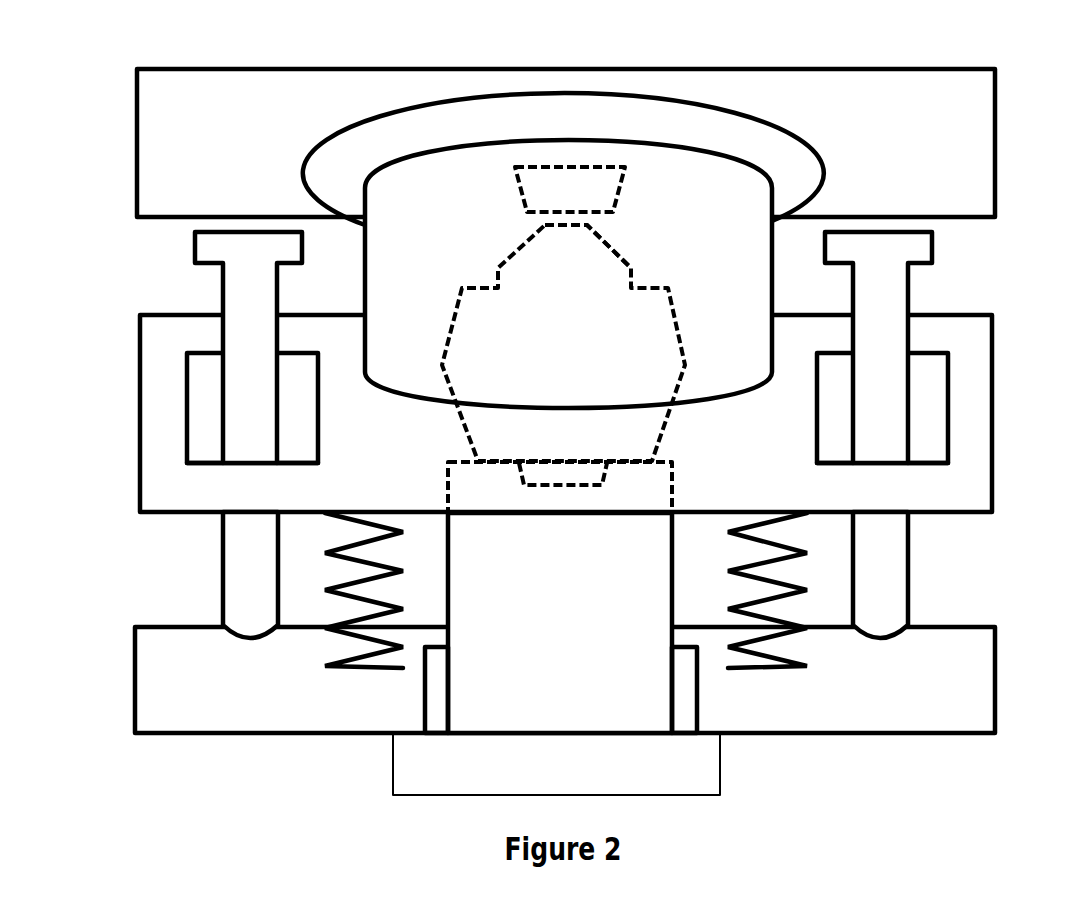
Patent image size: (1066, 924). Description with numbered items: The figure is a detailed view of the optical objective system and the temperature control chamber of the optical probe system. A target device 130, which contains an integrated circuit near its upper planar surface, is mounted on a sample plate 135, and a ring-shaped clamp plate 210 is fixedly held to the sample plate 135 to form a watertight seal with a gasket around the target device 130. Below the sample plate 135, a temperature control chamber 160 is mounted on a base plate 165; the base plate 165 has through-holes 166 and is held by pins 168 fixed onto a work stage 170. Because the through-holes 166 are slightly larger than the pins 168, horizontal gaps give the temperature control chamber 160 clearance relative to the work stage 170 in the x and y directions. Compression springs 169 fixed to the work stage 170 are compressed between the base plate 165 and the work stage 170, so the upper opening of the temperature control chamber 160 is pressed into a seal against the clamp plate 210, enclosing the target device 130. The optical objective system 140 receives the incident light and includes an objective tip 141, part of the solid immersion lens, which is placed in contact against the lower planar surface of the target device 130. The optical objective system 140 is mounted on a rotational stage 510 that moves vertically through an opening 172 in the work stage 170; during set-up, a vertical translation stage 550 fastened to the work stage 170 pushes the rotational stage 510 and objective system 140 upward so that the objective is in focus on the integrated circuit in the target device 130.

The target device 130 is at (546, 195).
The sample plate 135 is at (963, 112).
The optical objective system 140 is at (538, 373).
The objective tip 141 is at (597, 242).
The temperature control chamber 160 is at (707, 179).
The base plate 165 is at (965, 353).
The through-holes 166 is at (205, 396).
The pins 168 is at (243, 577).
The compression springs 169 is at (341, 672).
The work stage 170 is at (972, 665).
The opening 172 is at (684, 712).
The clamp plate 210 is at (650, 114).
The rotational stage 510 is at (538, 642).
The vertical translation stage 550 is at (538, 773).